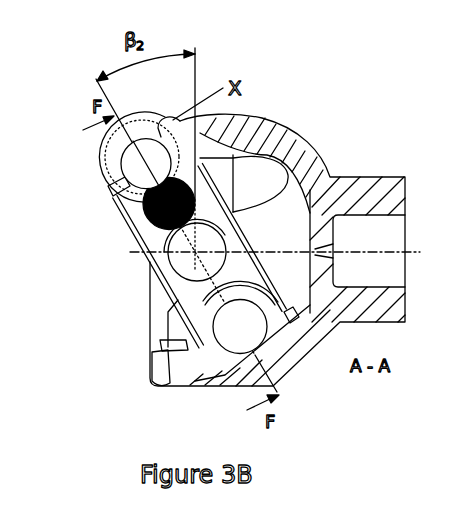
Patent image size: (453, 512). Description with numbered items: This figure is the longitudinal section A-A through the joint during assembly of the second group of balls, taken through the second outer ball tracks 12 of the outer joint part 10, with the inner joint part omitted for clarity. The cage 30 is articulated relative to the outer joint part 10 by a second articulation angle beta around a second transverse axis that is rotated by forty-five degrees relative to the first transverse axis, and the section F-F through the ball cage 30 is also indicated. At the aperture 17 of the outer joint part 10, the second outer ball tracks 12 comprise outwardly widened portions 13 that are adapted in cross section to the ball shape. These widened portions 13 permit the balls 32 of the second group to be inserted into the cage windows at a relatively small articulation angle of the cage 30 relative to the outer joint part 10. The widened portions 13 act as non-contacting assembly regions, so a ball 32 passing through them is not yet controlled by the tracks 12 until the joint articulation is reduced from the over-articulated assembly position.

The outer joint part 10 is at (278, 138).
The second outer ball tracks 12 is at (262, 122).
The outwardly widened portions 13 is at (160, 375).
The aperture 17 is at (147, 297).
The cage 30 is at (168, 347).
The balls of the second group of balls 32 is at (110, 155).